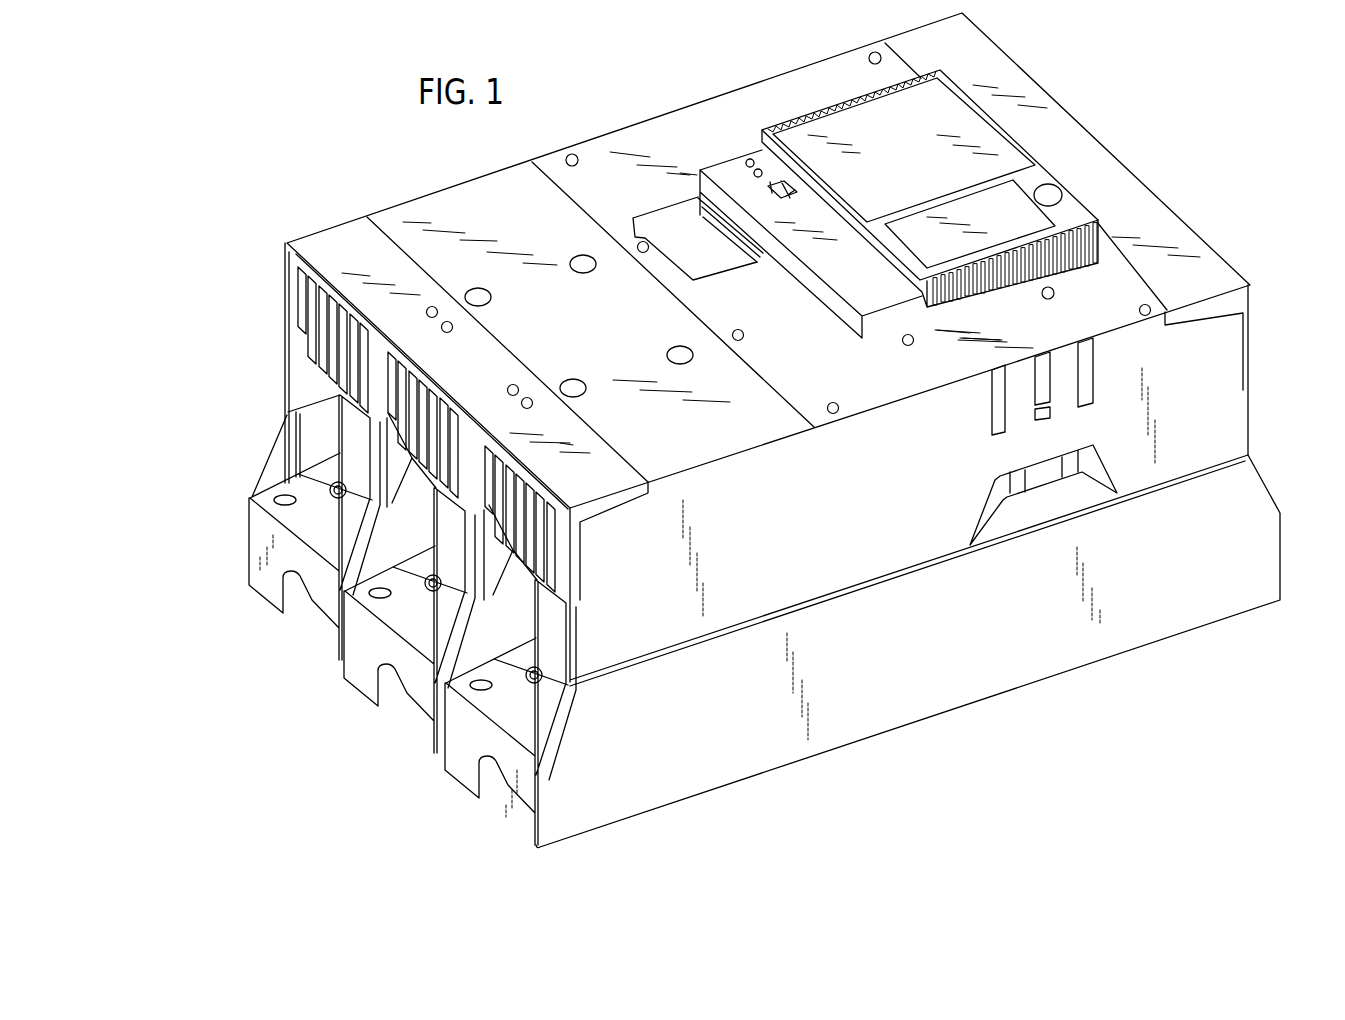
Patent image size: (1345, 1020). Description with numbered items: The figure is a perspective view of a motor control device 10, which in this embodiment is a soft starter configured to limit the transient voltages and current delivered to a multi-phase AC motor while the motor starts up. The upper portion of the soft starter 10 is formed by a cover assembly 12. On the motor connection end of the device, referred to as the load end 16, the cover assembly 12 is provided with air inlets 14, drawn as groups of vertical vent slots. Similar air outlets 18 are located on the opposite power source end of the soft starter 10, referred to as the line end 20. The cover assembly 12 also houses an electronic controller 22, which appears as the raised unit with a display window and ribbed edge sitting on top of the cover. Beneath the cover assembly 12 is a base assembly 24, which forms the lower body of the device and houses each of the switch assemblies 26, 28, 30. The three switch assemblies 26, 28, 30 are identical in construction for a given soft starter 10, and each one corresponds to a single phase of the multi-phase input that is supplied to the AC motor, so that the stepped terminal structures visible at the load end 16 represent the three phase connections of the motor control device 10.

The motor control device 10 is at (1200, 99).
The cover assembly 12 is at (834, 526).
The air inlets 14 is at (299, 384).
The load end 16 is at (413, 620).
The air outlets 18 is at (1259, 337).
The line end 20 is at (923, 651).
The electronic controller 22 is at (743, 133).
The base assembly 24 is at (910, 671).
The switch assembly 26 is at (560, 692).
The switch assembly 28 is at (440, 602).
The switch assembly 30 is at (338, 458).